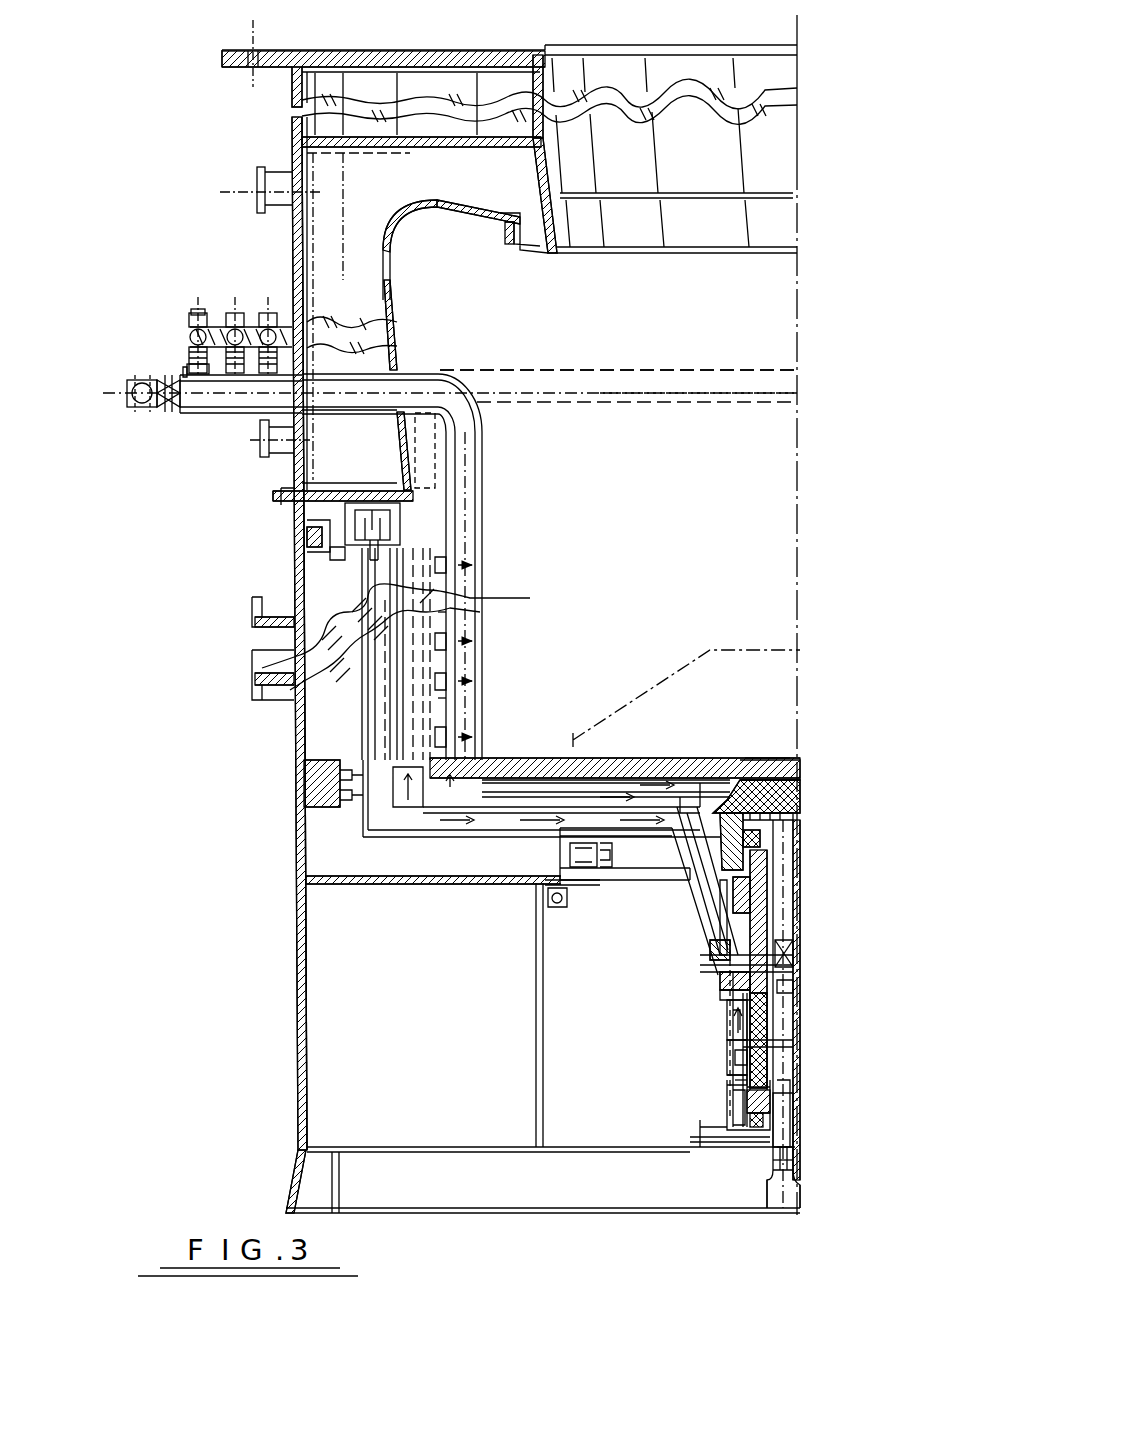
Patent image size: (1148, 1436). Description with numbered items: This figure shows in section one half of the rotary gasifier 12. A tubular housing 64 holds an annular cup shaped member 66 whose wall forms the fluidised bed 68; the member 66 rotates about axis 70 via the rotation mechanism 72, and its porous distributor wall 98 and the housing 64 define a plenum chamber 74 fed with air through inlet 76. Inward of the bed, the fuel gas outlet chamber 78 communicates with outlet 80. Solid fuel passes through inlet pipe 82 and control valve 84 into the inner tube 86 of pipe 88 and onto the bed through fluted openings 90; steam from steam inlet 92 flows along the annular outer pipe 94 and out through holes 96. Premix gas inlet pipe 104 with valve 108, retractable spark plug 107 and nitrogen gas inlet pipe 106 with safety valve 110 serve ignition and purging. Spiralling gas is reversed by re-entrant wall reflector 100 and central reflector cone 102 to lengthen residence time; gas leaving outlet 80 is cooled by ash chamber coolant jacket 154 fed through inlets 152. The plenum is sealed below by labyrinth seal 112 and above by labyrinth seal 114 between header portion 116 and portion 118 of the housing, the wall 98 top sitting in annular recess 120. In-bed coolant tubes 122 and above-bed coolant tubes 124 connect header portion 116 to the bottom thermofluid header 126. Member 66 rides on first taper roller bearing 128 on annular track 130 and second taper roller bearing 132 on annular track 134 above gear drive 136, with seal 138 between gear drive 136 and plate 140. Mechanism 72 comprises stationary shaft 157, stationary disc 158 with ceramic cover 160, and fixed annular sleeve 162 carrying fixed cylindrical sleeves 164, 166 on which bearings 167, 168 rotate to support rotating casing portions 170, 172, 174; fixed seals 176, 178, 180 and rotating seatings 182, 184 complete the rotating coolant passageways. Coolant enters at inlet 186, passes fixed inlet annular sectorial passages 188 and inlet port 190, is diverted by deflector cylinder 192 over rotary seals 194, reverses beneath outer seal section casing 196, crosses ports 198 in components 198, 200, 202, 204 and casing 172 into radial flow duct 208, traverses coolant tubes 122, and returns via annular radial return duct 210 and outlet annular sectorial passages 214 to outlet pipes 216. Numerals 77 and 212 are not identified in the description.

The rotary gasifier 12 is at (255, 805).
The tubular housing 64 is at (294, 835).
The annular cup shaped member 66 is at (525, 568).
The annular fluidised bed 68 is at (470, 598).
The axis 70 is at (797, 441).
The rotation mechanism 72 is at (833, 987).
The annular plenum chamber 74 is at (320, 728).
The inlet 76 is at (250, 635).
The foot 77 is at (300, 1188).
The fuel gas outlet chamber 78 is at (752, 511).
The outlet 80 is at (707, 153).
The inlet pipe 82 is at (120, 412).
The control valve 84 is at (187, 380).
The inner tube 86 is at (413, 387).
The pipe 88 is at (486, 432).
The fluted openings 90 is at (488, 683).
The steam inlet 92 is at (268, 315).
The annular outer pipe 94 is at (357, 367).
The holes 96 is at (488, 657).
The porous metal cylindrical distributor wall 98 is at (362, 697).
The re-entrant wall reflector 100 is at (600, 260).
The central reflector cone 102 is at (680, 655).
The premix gas inlet pipe 104 is at (190, 318).
The nitrogen gas inlet pipe 106 is at (233, 318).
The retractable spark plug 107 is at (186, 372).
The valve 108 is at (192, 365).
The safety valve 110 is at (198, 312).
The labyrinth seal 112 is at (335, 780).
The labyrinth type seal 114 is at (486, 480).
The header portion 116 is at (322, 550).
The portion of housing 118 is at (353, 487).
The annular recess 120 is at (353, 557).
The bed coolant tubes 122 is at (300, 655).
The above bed coolant tubes 124 is at (488, 633).
The bottom thermofluid header 126 is at (364, 840).
The first spring-headed taper roller bearing 128 is at (305, 503).
The annular track 130 is at (305, 535).
The second roller taper bearing 132 is at (561, 842).
The annular track 134 is at (570, 864).
The gear drive 136 is at (552, 902).
The seal 138 is at (575, 894).
The plate 140 is at (398, 885).
The inlets 152 is at (262, 168).
The ash chamber coolant jacket 154 is at (363, 212).
The stationary shaft 157 is at (793, 1128).
The stationary disc 158 is at (672, 758).
The ceramic cover 160 is at (770, 752).
The fixed annular sleeve 162 is at (807, 1050).
The fixed cylindrical sleeve 164 is at (790, 1010).
The fixed cylindrical sleeve 166 is at (780, 856).
The bearing 167 is at (733, 1132).
The bearing 168 is at (773, 805).
The rotating casing portion 170 is at (707, 933).
The intermediate rotating casing 172 is at (733, 910).
The rotating casing portion 174 is at (775, 777).
The fixed seal 176 is at (800, 1100).
The fixed seal 178 is at (777, 907).
The fixed seal 180 is at (777, 865).
The rotating seating 182 is at (727, 1088).
The rotating seating 184 is at (776, 840).
The inlet 186 is at (770, 1183).
The fixed inlet annular sectorial passages 188 is at (803, 1120).
The inlet port 190 is at (800, 1087).
The deflector cylinder 192 is at (722, 1092).
The rotary seals 194 is at (725, 1080).
The outer seal section casing 196 is at (736, 1100).
The axial peripheral cross ports 198 is at (777, 884).
The component 200 is at (740, 1013).
The component 202 is at (720, 997).
The component 204 is at (715, 972).
The radial flow duct 208 is at (606, 770).
The annular radial return duct 210 is at (760, 742).
The ring 212 is at (783, 965).
The outlet annular sectorial passages 214 is at (793, 1027).
The outlet pipes 216 is at (800, 1197).